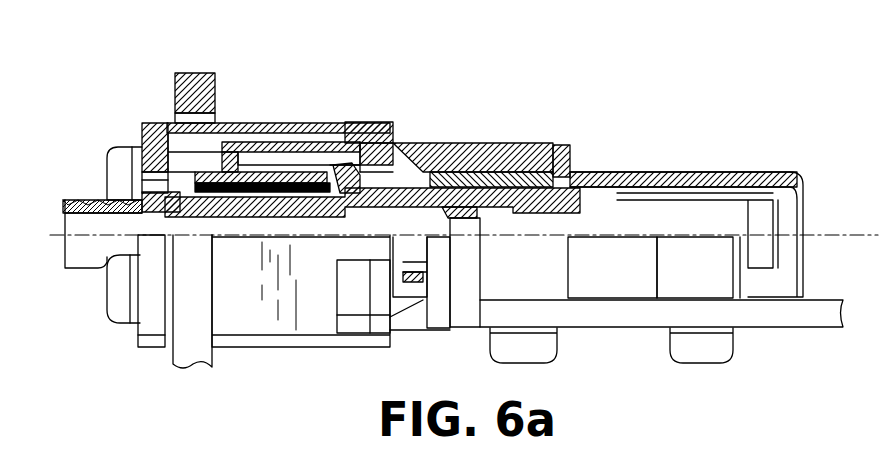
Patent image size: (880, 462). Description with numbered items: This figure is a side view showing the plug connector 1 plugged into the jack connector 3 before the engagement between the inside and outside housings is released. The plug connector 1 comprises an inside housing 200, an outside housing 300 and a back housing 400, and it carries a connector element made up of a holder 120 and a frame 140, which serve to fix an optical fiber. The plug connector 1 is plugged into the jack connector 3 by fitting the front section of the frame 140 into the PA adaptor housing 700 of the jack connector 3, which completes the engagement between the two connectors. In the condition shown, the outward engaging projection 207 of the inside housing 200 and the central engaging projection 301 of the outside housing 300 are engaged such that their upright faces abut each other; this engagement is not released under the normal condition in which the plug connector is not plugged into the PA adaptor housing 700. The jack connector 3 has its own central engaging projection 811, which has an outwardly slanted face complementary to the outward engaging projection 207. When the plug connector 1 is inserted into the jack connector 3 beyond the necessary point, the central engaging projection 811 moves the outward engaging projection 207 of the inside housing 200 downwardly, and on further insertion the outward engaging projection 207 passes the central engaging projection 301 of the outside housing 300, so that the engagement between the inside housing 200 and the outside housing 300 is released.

The plug connector 1 is at (258, 323).
The jack connector 3 is at (602, 296).
The holder 120 is at (77, 200).
The frame 140 is at (559, 144).
The inside housing 200 is at (271, 137).
The outward engaging projection 207 is at (366, 133).
The outside housing 300 is at (396, 112).
The central engaging projection 301 is at (378, 122).
The back housing 400 is at (141, 127).
The PA adaptor housing 700 is at (654, 165).
The central engaging projection 811 is at (440, 143).